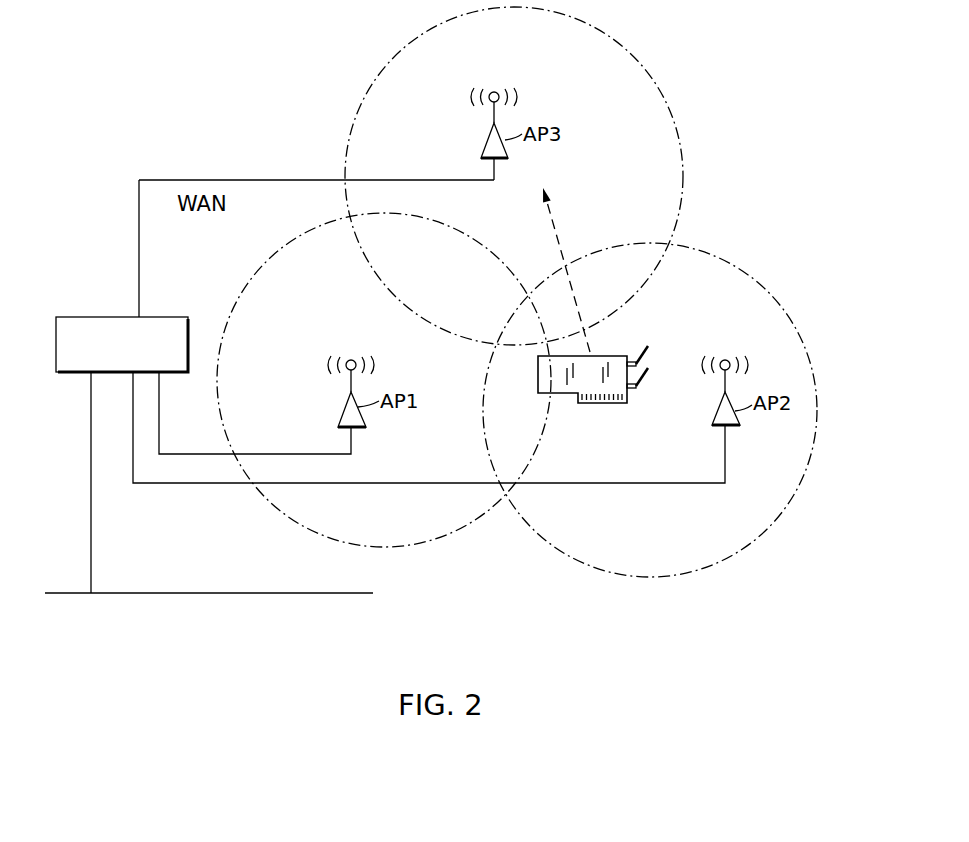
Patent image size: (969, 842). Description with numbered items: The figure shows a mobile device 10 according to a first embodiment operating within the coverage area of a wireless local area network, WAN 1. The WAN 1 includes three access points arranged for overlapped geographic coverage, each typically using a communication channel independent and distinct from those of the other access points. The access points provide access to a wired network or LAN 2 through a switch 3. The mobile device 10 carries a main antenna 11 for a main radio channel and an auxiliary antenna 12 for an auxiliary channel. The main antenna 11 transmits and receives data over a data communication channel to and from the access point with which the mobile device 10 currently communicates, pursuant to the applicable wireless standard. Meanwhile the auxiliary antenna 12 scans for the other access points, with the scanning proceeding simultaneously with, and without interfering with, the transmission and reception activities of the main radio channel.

The WAN 1 is at (716, 90).
The wired network or LAN 2 is at (263, 594).
The switch 3 is at (88, 316).
The mobile device 10 is at (575, 393).
The main antenna 11 is at (648, 347).
The auxiliary antenna 12 is at (648, 373).